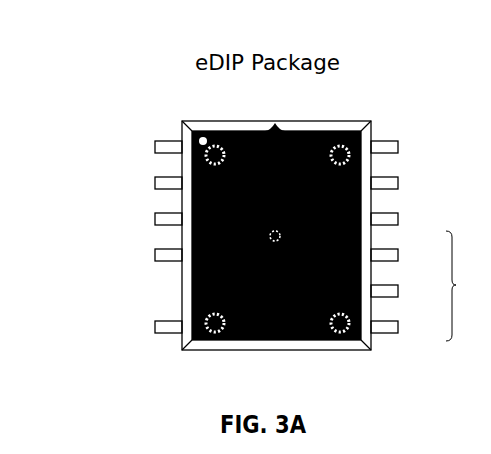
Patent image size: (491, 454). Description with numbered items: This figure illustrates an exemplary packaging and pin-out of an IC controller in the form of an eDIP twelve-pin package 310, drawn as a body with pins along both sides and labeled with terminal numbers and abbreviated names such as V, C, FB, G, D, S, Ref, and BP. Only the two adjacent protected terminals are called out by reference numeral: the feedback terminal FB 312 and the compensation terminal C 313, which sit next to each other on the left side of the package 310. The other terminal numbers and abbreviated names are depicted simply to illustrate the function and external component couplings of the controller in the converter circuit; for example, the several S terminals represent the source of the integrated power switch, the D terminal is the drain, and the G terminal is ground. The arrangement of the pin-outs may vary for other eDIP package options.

The eDIP 12-pin package 310 is at (283, 111).
The feedback terminal FB 312 is at (112, 203).
The compensation terminal C 313 is at (117, 157).